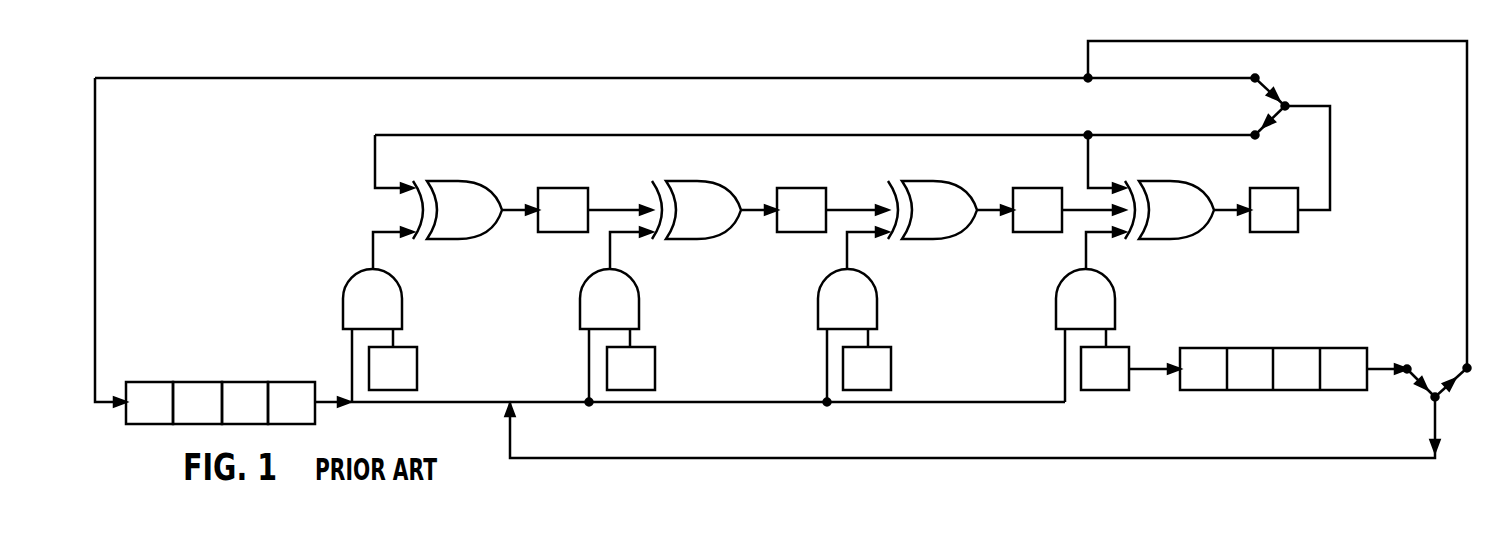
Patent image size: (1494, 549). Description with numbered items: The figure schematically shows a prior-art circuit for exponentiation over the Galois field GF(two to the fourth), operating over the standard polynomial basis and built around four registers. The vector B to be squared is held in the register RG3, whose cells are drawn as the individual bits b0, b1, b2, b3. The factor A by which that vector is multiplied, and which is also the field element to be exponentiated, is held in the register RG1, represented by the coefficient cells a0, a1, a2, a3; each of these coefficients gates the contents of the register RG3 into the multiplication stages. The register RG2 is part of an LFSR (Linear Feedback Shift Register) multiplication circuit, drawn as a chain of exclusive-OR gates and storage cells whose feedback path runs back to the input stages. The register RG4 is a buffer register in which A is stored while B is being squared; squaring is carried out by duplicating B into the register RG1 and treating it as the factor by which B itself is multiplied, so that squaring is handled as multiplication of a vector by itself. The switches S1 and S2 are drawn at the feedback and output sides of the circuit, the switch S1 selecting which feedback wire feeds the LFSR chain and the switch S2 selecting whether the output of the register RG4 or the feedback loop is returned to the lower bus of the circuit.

The register RG1 is at (749, 368).
The register RG2 is at (905, 172).
The register RG3 is at (220, 382).
The buffer register RG4 is at (1268, 392).
The switch S1 is at (1284, 99).
The switch S2 is at (1437, 367).
The coefficient a0 is at (393, 368).
The coefficient a1 is at (631, 368).
The coefficient a2 is at (867, 368).
The coefficient a3 is at (1105, 368).
The data bit b0 is at (149, 403).
The data bit b1 is at (197, 403).
The data bit b2 is at (245, 403).
The data bit b3 is at (291, 403).